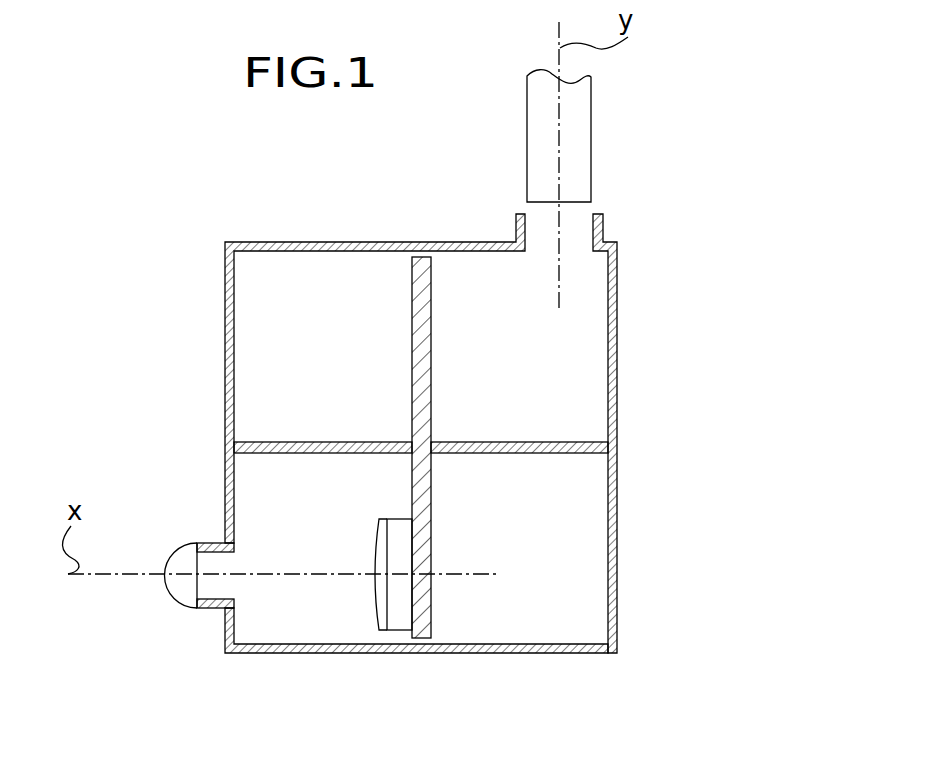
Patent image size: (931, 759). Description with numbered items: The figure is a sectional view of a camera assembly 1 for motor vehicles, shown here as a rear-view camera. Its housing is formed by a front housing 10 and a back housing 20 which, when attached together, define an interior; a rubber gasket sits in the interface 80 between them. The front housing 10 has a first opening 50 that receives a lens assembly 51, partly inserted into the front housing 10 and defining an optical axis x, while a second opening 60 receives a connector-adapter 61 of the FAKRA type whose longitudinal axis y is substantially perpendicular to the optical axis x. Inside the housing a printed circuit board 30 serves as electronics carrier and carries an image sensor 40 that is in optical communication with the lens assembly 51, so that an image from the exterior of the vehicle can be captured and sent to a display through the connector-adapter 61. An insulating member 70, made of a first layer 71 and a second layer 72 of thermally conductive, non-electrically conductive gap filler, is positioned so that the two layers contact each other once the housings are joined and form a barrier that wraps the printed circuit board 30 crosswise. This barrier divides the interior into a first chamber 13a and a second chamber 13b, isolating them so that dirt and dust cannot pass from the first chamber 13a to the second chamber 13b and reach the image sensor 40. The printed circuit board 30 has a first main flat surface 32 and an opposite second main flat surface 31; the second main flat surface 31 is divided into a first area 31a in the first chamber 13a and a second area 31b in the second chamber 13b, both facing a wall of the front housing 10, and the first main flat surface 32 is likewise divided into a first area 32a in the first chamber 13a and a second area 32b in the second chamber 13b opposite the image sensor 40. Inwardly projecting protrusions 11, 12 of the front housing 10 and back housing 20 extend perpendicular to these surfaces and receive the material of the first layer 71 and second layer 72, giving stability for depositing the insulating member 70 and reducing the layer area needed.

The camera assembly 1 is at (688, 229).
The front housing 10 is at (229, 358).
The protrusion 11 is at (260, 442).
The protrusion 12 is at (588, 442).
The first chamber 13a is at (258, 310).
The second chamber 13b is at (232, 620).
The back housing 20 is at (616, 288).
The printed circuit board 30 is at (384, 302).
The second main flat surface 31 is at (432, 374).
The first area of the second main surface 31a is at (440, 283).
The second area of the second main surface 31b is at (431, 614).
The first main flat surface 32 is at (410, 395).
The first area of the first main surface 32a is at (412, 278).
The second area of the first main surface 32b is at (412, 490).
The image sensor 40 is at (379, 600).
The first opening 50 is at (230, 552).
The lens assembly 51 is at (183, 590).
The second opening 60 is at (578, 223).
The connector-adapter 61 is at (578, 130).
The insulating member 70 is at (498, 440).
The first layer 71 is at (296, 447).
The second layer 72 is at (529, 452).
The interface 80 is at (421, 645).